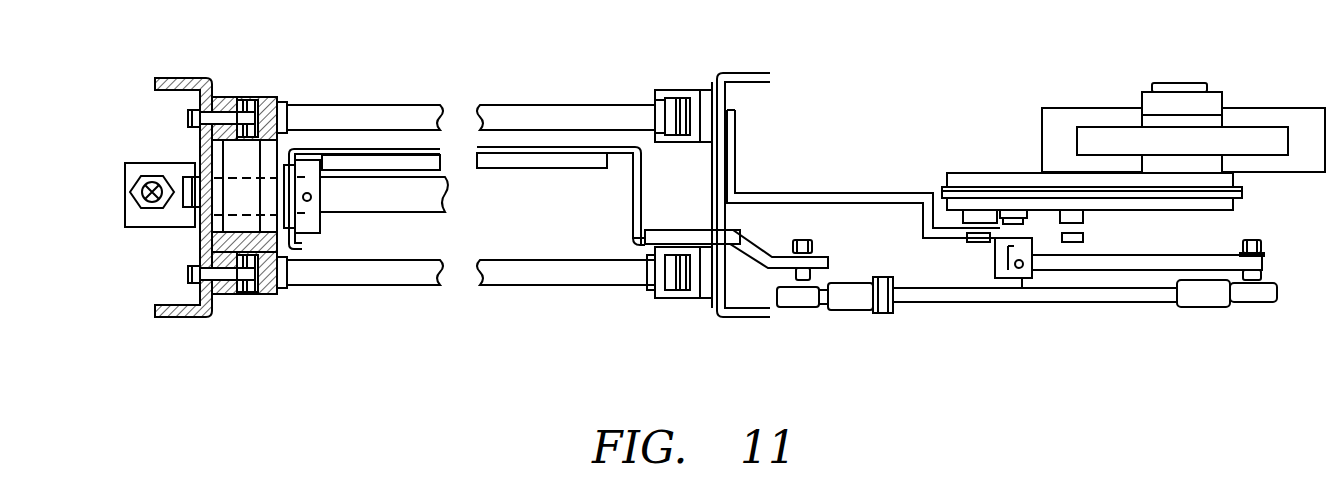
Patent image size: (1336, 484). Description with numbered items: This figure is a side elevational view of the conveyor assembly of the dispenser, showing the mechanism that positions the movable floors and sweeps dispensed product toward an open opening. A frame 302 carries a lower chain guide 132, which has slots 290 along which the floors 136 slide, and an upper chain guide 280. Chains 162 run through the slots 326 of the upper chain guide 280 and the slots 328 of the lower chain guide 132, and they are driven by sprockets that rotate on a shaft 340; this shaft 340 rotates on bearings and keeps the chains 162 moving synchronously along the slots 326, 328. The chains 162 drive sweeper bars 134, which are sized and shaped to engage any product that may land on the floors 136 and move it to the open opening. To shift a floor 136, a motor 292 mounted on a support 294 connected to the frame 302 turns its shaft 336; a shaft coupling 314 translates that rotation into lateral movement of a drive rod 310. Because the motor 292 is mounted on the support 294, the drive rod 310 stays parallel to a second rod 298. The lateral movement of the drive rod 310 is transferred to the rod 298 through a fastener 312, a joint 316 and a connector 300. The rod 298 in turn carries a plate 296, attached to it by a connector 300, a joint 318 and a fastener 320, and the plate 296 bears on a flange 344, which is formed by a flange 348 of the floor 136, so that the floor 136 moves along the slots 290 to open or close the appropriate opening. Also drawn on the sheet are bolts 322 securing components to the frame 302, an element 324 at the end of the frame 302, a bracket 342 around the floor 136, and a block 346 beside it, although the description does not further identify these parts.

The lower chain guide 132 is at (232, 300).
The sweeper bar 134 is at (498, 112).
The floor 136 is at (393, 160).
The chain 162 is at (266, 97).
The upper chain guide 280 is at (708, 97).
The slot 290 is at (212, 243).
The motor 292 is at (1150, 102).
The support 294 is at (847, 200).
The plate 296 is at (788, 236).
The rod 298 is at (952, 296).
The connector 300 is at (858, 297).
The frame 302 is at (170, 77).
The drive rod 310 is at (1158, 262).
The fastener 312 is at (1248, 240).
The shaft coupling 314 is at (1018, 280).
The joint 316 is at (1275, 290).
The joint 318 is at (805, 295).
The fastener 320 is at (812, 250).
The bolt 322 is at (185, 118).
The adjusting screw 324 is at (142, 166).
The slot 326 is at (235, 97).
The slot 328 is at (240, 298).
The shaft 336 is at (992, 251).
The shaft 340 is at (447, 192).
The bracket 342 is at (283, 252).
The flange 344 is at (641, 251).
The block 346 is at (320, 207).
The flange 348 is at (633, 206).